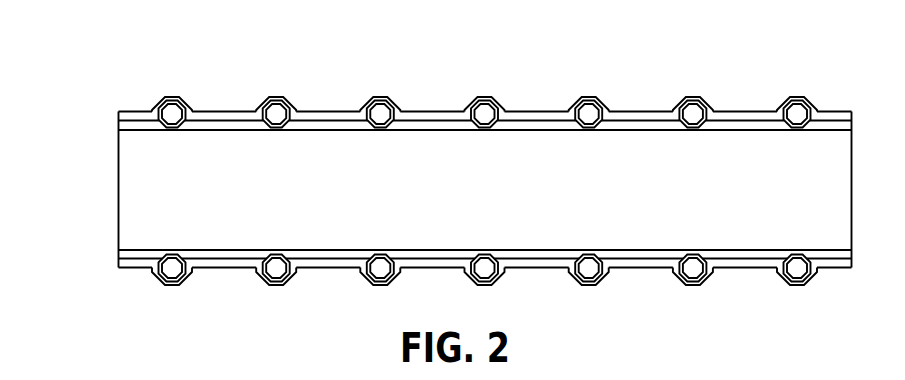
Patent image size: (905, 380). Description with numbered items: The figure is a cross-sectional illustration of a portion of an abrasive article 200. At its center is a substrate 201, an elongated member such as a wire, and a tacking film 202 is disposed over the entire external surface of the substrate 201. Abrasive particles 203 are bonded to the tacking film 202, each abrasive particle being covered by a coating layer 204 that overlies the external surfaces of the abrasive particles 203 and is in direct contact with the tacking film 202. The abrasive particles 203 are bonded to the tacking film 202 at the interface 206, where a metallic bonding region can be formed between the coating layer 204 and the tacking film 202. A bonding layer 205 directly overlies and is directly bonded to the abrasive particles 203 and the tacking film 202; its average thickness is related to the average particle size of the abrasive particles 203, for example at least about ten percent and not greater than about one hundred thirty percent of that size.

The abrasive article 200 is at (445, 146).
The substrate 201 is at (158, 193).
The tacking film 202 is at (130, 124).
The abrasive particles 203 is at (366, 103).
The coating layer 204 is at (288, 100).
The bonding layer 205 is at (208, 112).
The interface 206 is at (477, 123).